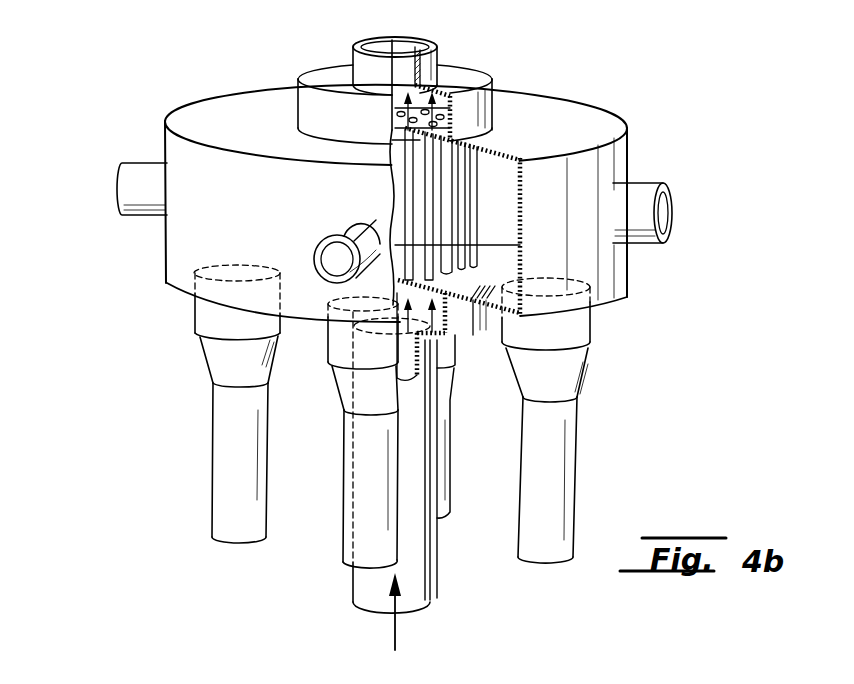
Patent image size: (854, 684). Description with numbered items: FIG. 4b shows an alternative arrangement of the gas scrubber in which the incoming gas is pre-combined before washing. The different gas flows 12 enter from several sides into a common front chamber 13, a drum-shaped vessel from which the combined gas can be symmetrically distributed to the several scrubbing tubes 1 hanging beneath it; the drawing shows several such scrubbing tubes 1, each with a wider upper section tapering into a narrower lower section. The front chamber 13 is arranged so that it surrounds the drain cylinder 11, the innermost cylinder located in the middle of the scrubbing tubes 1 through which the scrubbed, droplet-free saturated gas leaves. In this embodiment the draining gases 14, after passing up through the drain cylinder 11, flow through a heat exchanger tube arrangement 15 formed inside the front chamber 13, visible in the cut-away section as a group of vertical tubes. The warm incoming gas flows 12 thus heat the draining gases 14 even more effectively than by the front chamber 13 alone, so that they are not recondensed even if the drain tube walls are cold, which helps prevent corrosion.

The scrubbing tube 1 is at (228, 494).
The drain cylinder 11 is at (413, 587).
The gas flows 12 is at (98, 185).
The front chamber 13 is at (567, 110).
The draining gases 14 is at (395, 45).
The heat exchanger tube arrangement 15 is at (488, 206).